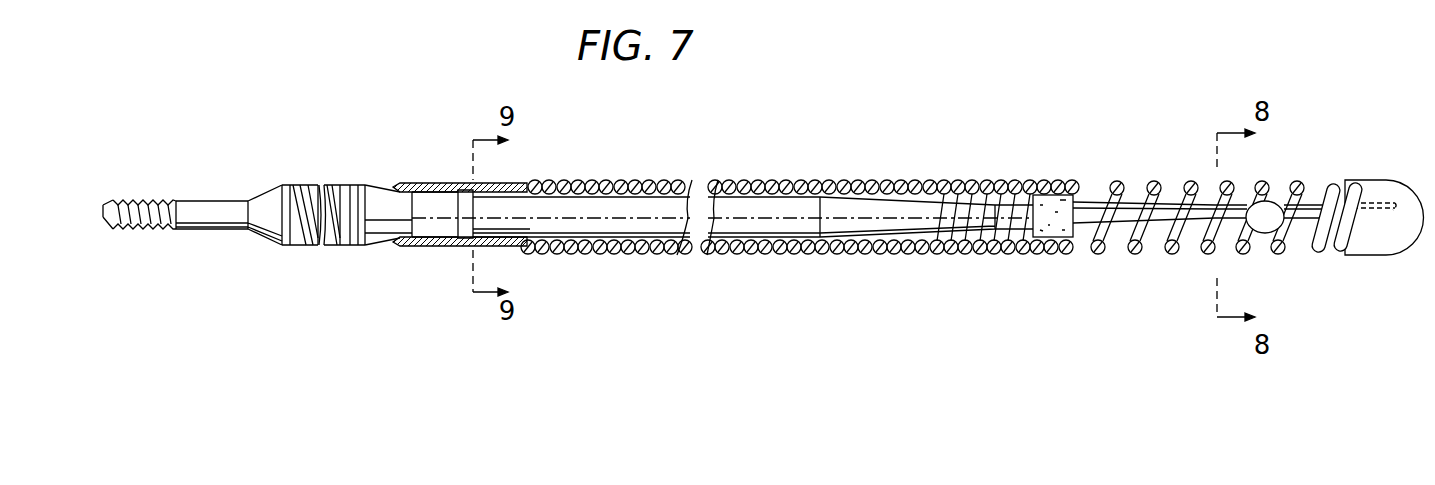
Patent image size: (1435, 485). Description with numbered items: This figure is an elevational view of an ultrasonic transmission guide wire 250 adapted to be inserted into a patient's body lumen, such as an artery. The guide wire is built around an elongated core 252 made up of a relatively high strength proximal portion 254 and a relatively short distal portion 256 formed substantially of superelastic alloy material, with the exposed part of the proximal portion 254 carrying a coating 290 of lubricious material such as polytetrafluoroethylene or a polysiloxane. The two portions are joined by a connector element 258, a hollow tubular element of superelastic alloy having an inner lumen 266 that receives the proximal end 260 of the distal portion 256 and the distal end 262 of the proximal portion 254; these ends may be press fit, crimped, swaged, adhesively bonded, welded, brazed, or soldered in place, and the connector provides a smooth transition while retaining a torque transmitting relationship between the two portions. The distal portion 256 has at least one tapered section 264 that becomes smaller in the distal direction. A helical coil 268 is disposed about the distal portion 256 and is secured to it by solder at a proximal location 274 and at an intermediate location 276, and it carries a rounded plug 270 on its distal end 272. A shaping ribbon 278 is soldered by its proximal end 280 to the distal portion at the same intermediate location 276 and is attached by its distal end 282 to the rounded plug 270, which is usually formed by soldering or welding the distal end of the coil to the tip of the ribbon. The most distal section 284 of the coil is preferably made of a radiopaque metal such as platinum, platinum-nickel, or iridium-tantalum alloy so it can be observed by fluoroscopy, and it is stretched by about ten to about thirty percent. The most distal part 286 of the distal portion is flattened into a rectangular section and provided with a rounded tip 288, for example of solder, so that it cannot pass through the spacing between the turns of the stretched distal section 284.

The ultrasonic transmission guide wire 250 is at (768, 160).
The elongated core 252 is at (336, 254).
The proximal portion 254 is at (313, 190).
The distal portion 256 is at (672, 215).
The connector element 258 is at (457, 246).
The proximal end 260 is at (510, 205).
The distal end 262 is at (428, 202).
The tapered section 264 is at (920, 212).
The inner lumen 266 is at (463, 200).
The helical coil 268 is at (788, 255).
The rounded plug 270 is at (1377, 240).
The distal end 272 is at (1345, 185).
The proximal location 274 is at (580, 182).
The intermediate location 276 is at (1042, 248).
The shaping ribbon 278 is at (1213, 212).
The proximal end 280 is at (1050, 200).
The distal end 282 is at (1370, 192).
The most distal section 284 is at (1137, 255).
The most distal part 286 is at (1217, 220).
The rounded tip 288 is at (1264, 218).
The coating 290 is at (302, 248).